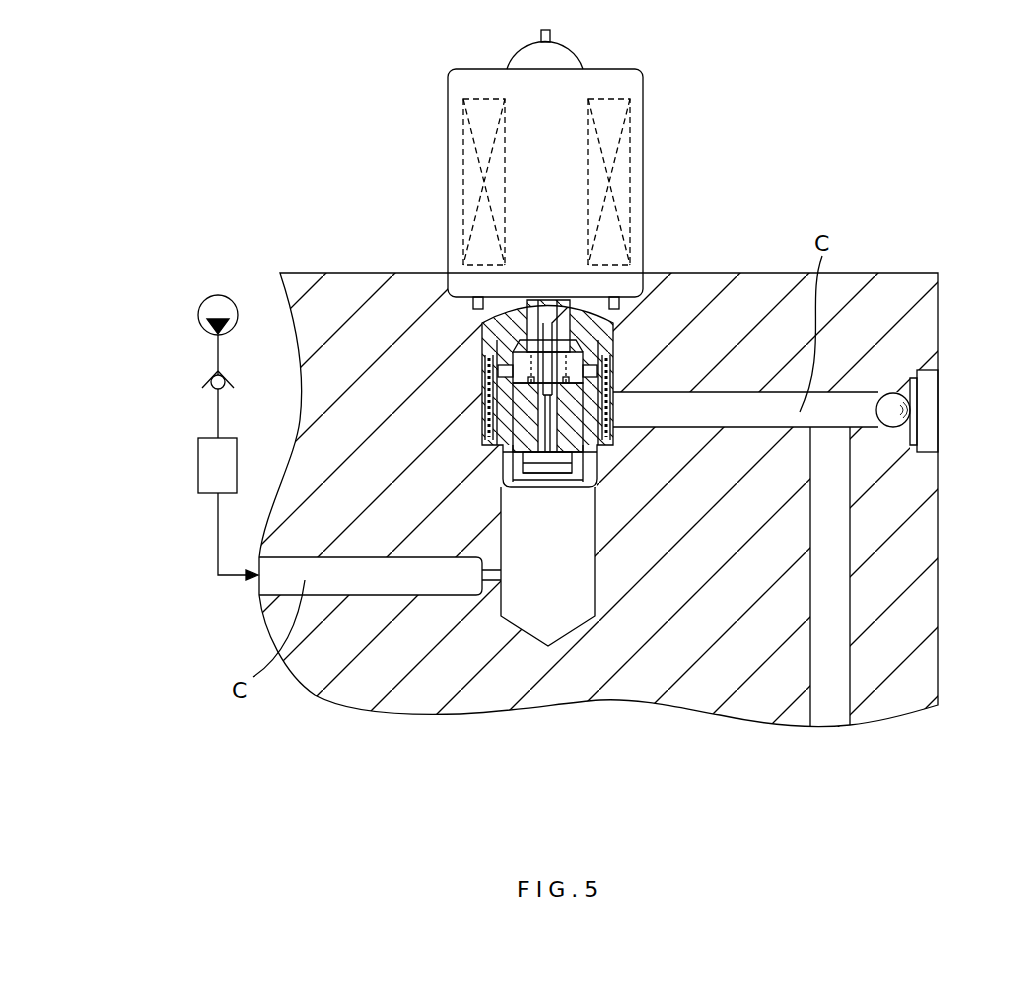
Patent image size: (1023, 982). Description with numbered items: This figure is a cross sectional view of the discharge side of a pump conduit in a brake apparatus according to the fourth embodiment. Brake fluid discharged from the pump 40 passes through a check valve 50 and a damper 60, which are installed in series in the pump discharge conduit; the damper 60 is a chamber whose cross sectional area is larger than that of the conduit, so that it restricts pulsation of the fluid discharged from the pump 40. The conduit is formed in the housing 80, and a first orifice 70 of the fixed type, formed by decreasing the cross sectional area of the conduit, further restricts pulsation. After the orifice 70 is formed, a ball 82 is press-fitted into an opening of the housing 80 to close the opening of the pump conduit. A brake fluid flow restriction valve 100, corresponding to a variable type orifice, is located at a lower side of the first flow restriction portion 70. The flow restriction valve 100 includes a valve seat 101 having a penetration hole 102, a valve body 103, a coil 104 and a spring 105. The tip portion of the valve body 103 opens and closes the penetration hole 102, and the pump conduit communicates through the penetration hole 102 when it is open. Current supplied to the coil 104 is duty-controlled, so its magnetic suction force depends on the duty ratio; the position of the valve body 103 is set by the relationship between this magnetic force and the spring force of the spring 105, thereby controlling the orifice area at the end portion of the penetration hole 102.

The brake fluid flow restriction valve 100 is at (650, 188).
The coil 104 is at (457, 184).
The valve seat 101 is at (522, 422).
The penetration hole 102 is at (545, 402).
The valve body 103 is at (547, 347).
The spring 105 is at (610, 342).
The housing 80 is at (858, 268).
The ball 82 is at (910, 410).
The first orifice 70 is at (478, 590).
The pump 40 is at (200, 316).
The check valve 50 is at (202, 382).
The damper 60 is at (208, 464).